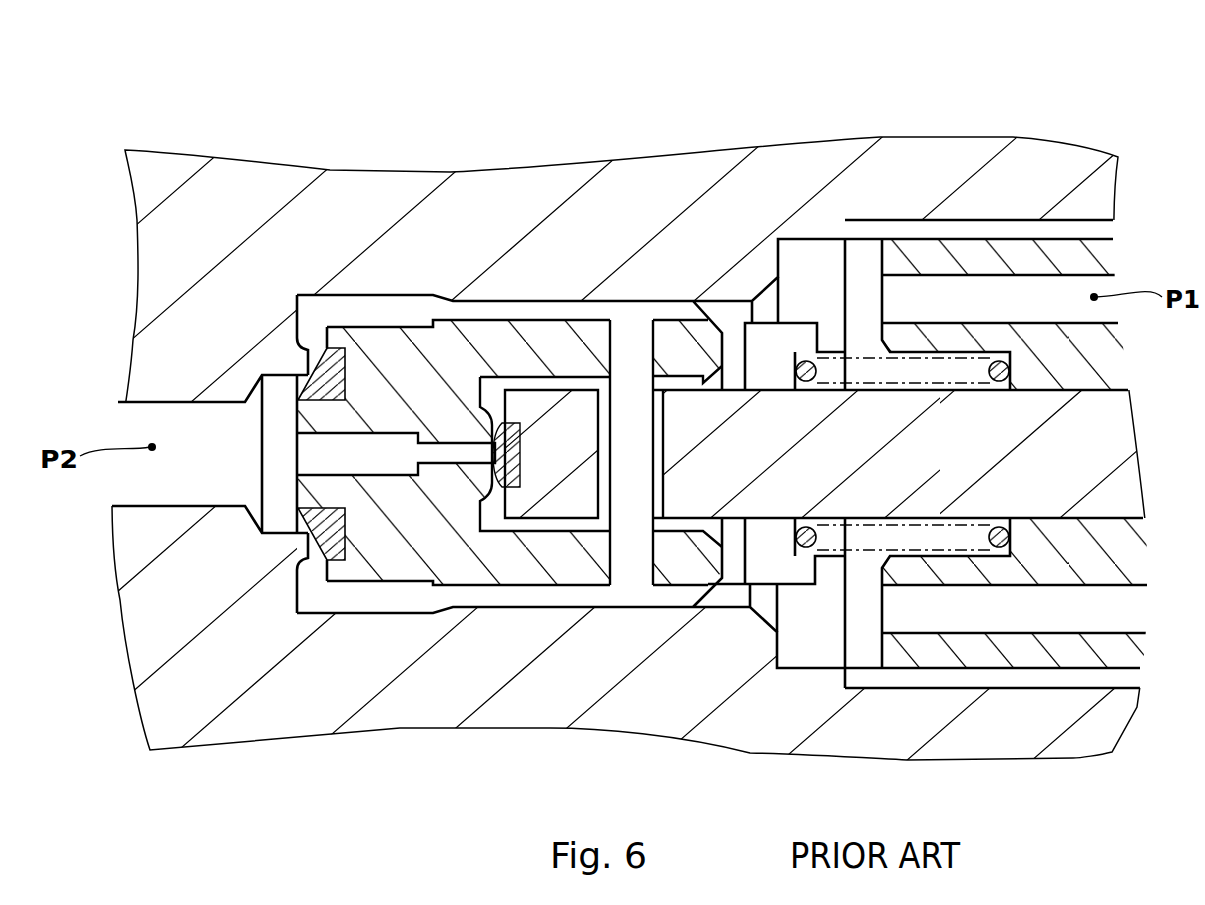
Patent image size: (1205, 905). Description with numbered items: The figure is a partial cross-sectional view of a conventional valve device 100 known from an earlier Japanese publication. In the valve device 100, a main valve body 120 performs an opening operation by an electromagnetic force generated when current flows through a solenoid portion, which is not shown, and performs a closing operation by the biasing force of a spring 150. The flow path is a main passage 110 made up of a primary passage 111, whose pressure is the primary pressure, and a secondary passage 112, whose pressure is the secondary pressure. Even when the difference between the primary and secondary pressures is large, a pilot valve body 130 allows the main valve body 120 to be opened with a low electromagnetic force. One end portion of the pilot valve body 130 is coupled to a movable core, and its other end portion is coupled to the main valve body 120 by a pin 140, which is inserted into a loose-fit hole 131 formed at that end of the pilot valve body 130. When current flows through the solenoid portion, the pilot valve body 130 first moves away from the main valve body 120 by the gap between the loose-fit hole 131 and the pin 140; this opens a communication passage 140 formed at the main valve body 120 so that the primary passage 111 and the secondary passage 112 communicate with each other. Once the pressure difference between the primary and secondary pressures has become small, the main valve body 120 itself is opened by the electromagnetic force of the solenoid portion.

The valve device 100 is at (1046, 104).
The main passage 110 is at (380, 622).
The primary passage 111 is at (788, 610).
The secondary passage 112 is at (182, 493).
The main valve body 120 is at (475, 330).
The pilot valve body 130 is at (765, 337).
The loose-fit hole 131 is at (597, 482).
The pin 140 is at (632, 330).
The spring 150 is at (828, 360).